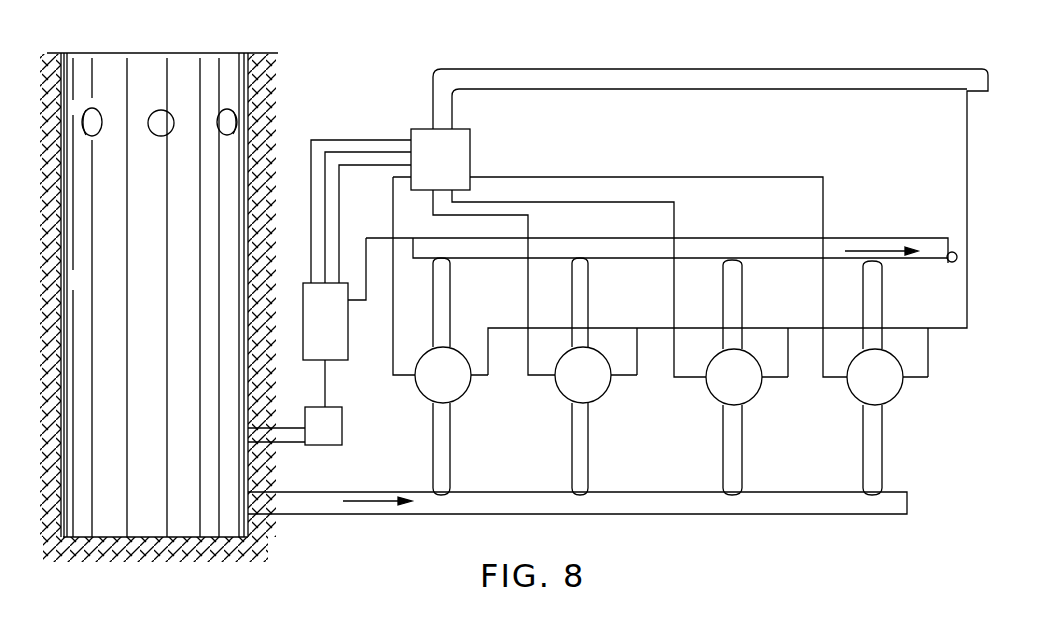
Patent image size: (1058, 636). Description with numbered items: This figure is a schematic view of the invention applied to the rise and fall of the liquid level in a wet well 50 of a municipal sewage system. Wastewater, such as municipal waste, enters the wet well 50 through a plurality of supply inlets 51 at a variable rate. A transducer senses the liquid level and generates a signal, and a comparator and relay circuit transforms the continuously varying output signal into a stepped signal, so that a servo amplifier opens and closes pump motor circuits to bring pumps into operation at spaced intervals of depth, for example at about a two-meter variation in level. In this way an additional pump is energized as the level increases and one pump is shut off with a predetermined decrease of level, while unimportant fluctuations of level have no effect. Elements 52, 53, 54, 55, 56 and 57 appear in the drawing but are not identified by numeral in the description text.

The wet well 50 is at (210, 525).
The supply inlets 51 is at (158, 119).
The temperature sensor 52 is at (342, 423).
The pressure-volume-pump controller 53 is at (308, 290).
The signal analyzer 54 is at (462, 150).
The pumps 55 is at (748, 392).
The inlet pipe 56 is at (667, 505).
The outlet pipe 57 is at (878, 241).